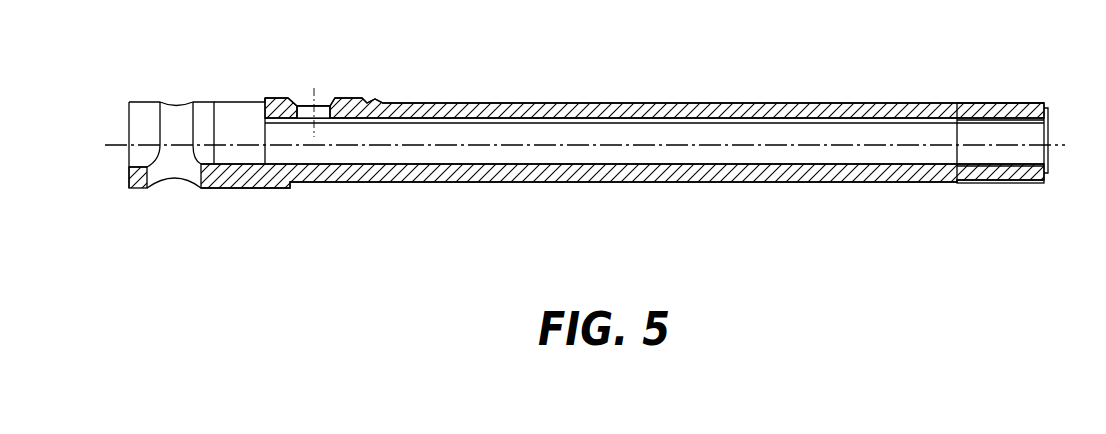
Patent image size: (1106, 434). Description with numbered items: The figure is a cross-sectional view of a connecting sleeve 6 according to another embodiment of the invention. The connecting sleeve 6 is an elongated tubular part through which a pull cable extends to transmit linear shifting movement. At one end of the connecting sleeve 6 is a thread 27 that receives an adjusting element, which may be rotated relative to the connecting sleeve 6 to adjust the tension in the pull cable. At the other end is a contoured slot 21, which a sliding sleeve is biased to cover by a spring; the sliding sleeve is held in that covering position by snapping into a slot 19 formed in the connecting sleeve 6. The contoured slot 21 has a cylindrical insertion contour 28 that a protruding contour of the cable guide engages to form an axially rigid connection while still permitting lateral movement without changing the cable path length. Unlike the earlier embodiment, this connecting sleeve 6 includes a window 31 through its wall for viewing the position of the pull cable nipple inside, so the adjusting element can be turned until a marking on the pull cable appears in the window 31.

The connecting sleeve 6 is at (747, 110).
The slot 19 is at (377, 184).
The contoured slot 21 is at (242, 112).
The thread 27 is at (992, 102).
The cylindrical insertion contour 28 is at (177, 118).
The window 31 is at (321, 114).